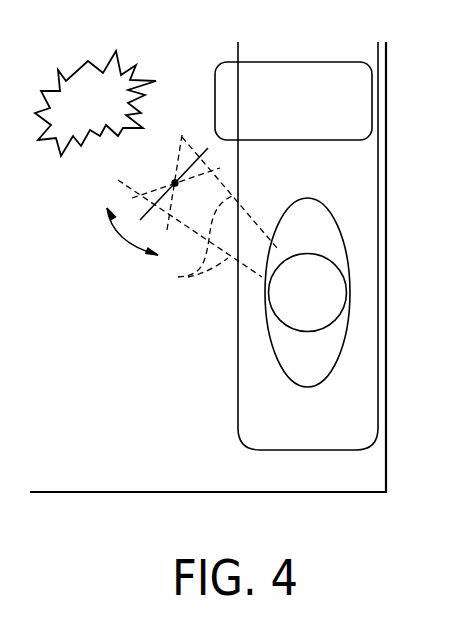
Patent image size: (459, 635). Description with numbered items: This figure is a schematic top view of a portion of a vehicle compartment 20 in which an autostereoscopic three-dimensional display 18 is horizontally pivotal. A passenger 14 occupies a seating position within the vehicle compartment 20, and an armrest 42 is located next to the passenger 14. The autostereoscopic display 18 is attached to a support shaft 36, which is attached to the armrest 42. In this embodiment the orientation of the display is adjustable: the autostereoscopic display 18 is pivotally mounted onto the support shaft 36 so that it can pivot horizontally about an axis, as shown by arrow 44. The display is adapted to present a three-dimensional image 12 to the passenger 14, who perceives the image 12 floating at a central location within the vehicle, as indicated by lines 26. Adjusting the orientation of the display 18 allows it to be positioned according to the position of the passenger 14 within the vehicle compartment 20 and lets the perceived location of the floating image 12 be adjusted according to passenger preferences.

The three-dimensional image 12 is at (104, 116).
The passenger 14 is at (322, 363).
The autostereoscopic three-dimensional display 18 is at (208, 148).
The vehicle compartment 20 is at (321, 498).
The lines 26 is at (178, 277).
The support shaft 36 is at (175, 183).
The armrest 42 is at (308, 111).
The arrow 44 is at (127, 240).